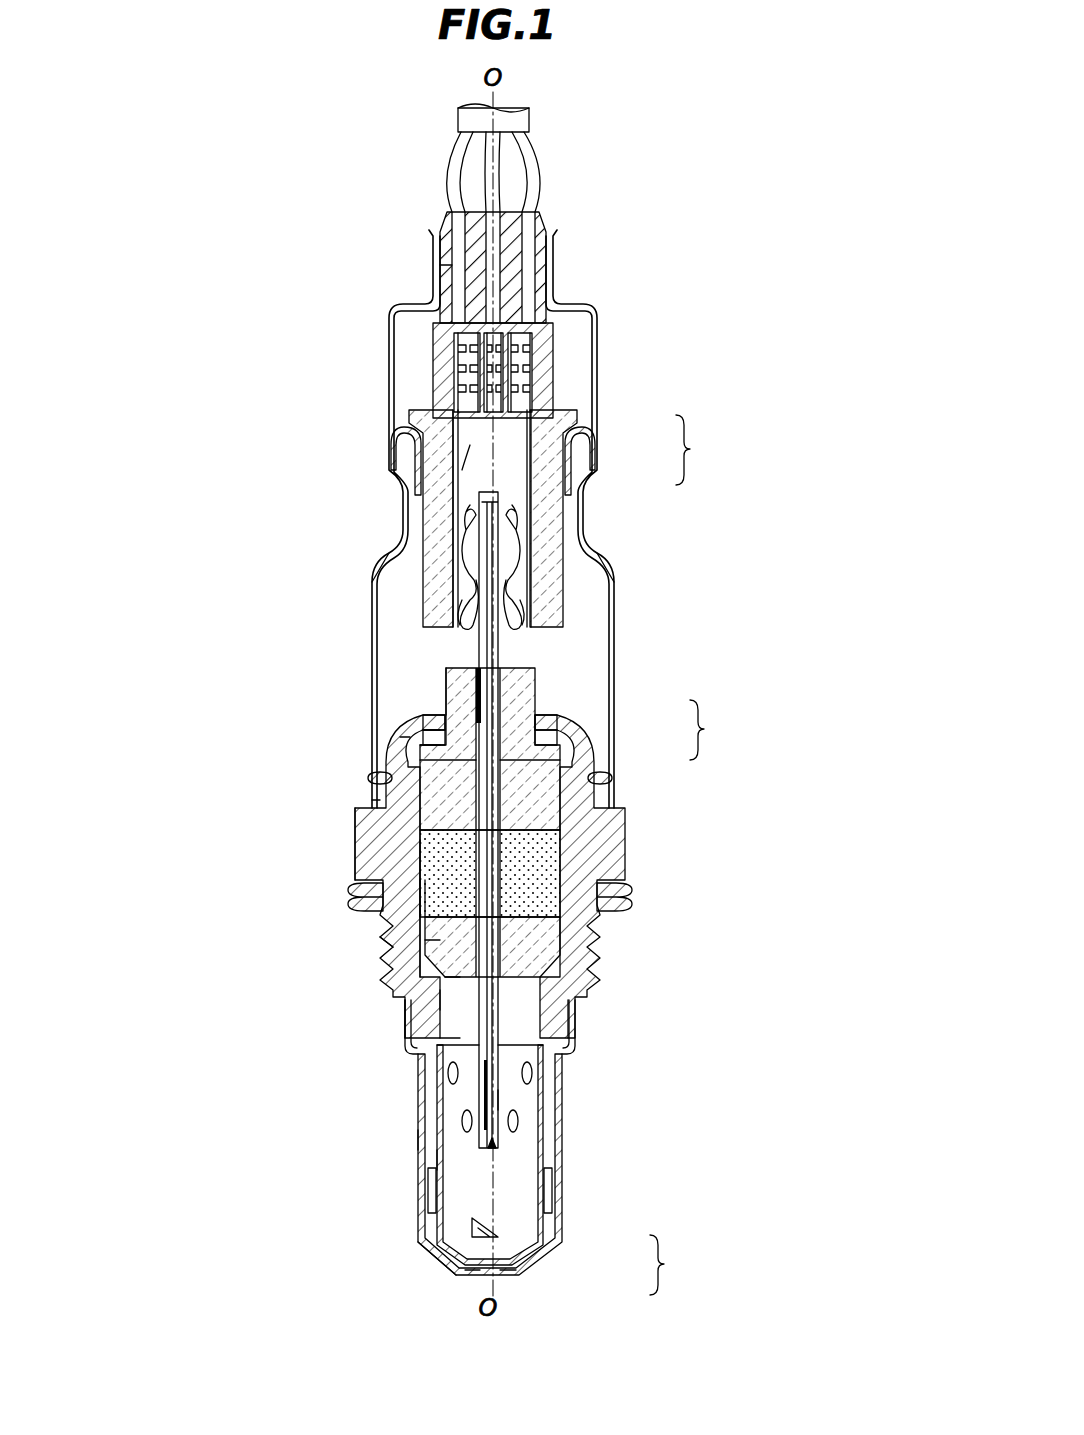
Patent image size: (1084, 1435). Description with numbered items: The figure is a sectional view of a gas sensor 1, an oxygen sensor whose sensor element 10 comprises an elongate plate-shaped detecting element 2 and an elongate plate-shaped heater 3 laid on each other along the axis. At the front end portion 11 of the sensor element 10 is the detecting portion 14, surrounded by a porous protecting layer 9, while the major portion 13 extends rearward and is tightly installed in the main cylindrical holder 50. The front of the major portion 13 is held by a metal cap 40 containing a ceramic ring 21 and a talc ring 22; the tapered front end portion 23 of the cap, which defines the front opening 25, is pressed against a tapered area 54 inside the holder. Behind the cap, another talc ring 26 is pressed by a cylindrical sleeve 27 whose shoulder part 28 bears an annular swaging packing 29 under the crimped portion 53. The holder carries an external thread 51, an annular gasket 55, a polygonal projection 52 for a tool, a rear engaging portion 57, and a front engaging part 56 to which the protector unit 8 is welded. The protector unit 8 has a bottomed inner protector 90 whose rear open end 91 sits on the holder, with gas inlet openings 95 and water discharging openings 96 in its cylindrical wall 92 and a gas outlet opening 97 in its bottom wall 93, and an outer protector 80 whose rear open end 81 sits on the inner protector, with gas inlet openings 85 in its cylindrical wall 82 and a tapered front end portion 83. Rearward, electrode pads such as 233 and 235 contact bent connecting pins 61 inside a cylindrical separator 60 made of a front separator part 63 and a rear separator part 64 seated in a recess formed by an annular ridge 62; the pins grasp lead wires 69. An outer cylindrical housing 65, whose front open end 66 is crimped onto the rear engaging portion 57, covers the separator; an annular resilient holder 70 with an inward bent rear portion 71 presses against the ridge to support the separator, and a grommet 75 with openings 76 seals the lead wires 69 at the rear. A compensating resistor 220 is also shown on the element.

The gas sensor 1 is at (660, 187).
The detecting element 2 is at (505, 766).
The heater 3 is at (500, 758).
The protector unit 8 is at (665, 1265).
The porous protecting layer 9 is at (500, 1098).
The sensor element 10 is at (575, 749).
The front end portion 11 is at (502, 1051).
The major portion 13 is at (508, 848).
The detecting portion 14 is at (490, 1152).
The ceramic ring 21 is at (440, 943).
The talc ring 22 is at (440, 890).
The front end portion 23 is at (447, 975).
The front opening 25 is at (425, 1010).
The talc ring 26 is at (425, 857).
The cylindrical sleeve 27 is at (432, 752).
The shoulder part 28 is at (427, 737).
The annular swaging packing 29 is at (408, 735).
The metal cap 40 is at (398, 915).
The main cylindrical holder 50 is at (643, 812).
The external thread 51 is at (390, 966).
The polygonal projection 52 is at (368, 820).
The crimped portion 53 is at (440, 705).
The tapered area 54 is at (440, 995).
The annular gasket 55 is at (345, 900).
The front engaging part 56 is at (450, 1040).
The rear engaging portion 57 is at (369, 788).
The cylindrical separator 60 is at (696, 450).
The connecting pins 61 is at (510, 530).
The annular ridge 62 is at (420, 410).
The front separator part 63 is at (545, 505).
The rear separator part 64 is at (548, 385).
The outer cylindrical housing 65 is at (622, 347).
The front open end 66 is at (368, 798).
The lead wires 69 is at (522, 200).
The annular resilient holder 70 is at (404, 425).
The rear portion 71 is at (468, 455).
The grommet 75 is at (432, 207).
The openings 76 is at (458, 272).
The outer protector 80 is at (565, 1248).
The rear open end 81 is at (578, 1030).
The cylindrical wall 82 is at (420, 1140).
The front end portion 83 is at (432, 1258).
The gas inlet openings 85 is at (428, 1190).
The inner protector 90 is at (528, 1272).
The rear open end 91 is at (573, 1014).
The cylindrical wall 92 is at (436, 1160).
The bottom wall 93 is at (502, 1278).
The gas inlet openings 95 is at (462, 1122).
The water discharging openings 96 is at (472, 1230).
The gas outlet opening 97 is at (478, 1278).
The compensating resistor 220 is at (474, 680).
The electrode pad 233 is at (465, 603).
The electrode pad 235 is at (512, 593).